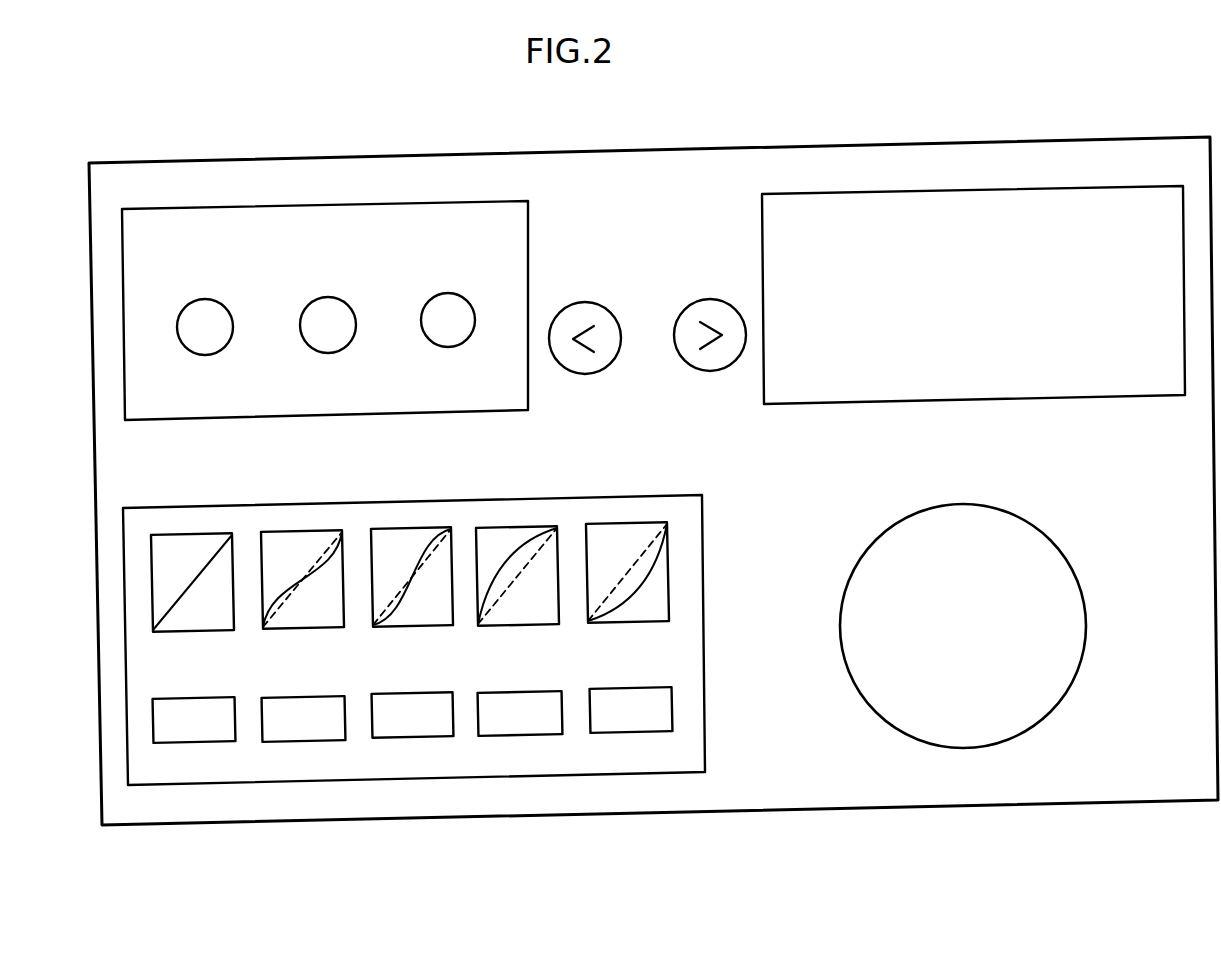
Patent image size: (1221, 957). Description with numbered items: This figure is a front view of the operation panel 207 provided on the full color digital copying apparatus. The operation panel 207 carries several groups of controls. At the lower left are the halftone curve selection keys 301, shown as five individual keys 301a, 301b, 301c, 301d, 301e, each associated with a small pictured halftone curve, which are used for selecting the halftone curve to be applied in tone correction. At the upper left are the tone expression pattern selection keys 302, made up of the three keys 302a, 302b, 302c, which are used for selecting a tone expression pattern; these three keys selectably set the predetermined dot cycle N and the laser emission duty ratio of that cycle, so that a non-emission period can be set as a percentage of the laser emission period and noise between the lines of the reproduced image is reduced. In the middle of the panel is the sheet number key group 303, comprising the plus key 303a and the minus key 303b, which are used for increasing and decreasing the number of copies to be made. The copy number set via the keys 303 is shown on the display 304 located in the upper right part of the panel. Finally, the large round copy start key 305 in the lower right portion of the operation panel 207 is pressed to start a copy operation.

The operation panel 207 is at (685, 223).
The halftone curve selection keys 301 is at (685, 737).
The halftone curve selection key 301a is at (192, 698).
The halftone curve selection key 301b is at (305, 697).
The halftone curve selection key 301c is at (409, 693).
The halftone curve selection key 301d is at (522, 692).
The halftone curve selection key 301e is at (630, 688).
The tone expression pattern selection keys 302 is at (498, 245).
The tone expression pattern selection key 302a is at (205, 299).
The tone expression pattern selection key 302b is at (329, 297).
The tone expression pattern selection key 302c is at (448, 293).
The sheet number keys 303 is at (758, 425).
The plus key 303a is at (585, 374).
The minus key 303b is at (710, 371).
The display 304 is at (984, 187).
The copy start key 305 is at (1087, 622).